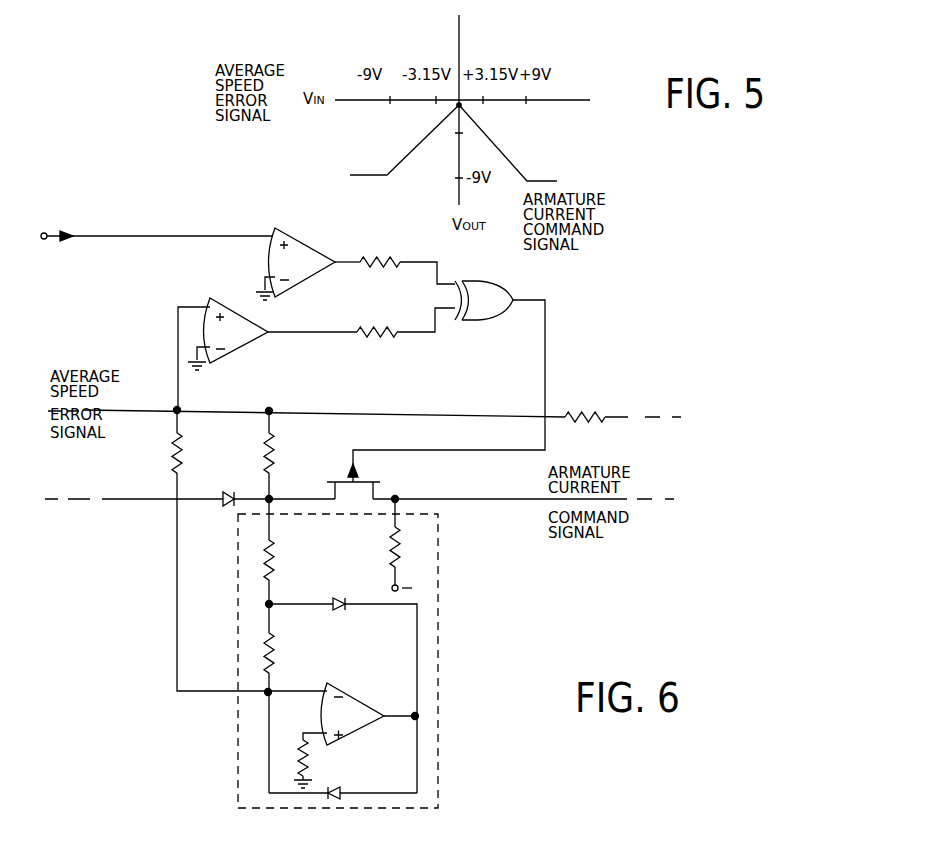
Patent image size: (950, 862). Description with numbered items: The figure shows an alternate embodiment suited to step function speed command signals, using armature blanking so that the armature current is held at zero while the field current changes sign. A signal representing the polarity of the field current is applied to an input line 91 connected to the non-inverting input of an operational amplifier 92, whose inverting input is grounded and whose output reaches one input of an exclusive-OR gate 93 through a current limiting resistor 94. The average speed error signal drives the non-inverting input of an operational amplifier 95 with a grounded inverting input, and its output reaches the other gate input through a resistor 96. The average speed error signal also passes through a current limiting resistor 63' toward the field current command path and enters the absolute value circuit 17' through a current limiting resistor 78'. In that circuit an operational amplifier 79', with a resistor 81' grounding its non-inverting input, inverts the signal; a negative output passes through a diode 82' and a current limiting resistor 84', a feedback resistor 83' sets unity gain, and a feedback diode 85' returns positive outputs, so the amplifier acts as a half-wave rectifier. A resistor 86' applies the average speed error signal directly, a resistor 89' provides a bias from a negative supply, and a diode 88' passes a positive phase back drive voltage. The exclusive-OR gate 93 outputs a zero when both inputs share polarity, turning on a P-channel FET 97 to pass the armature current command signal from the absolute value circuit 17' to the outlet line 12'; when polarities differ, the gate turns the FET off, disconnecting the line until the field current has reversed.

The input line 91 is at (56, 235).
The operational amplifier 92 is at (292, 247).
The exclusive-OR gate 93 is at (478, 292).
The current limiting resistor 94 is at (383, 250).
The operational amplifier 95 is at (242, 346).
The resistor 96 is at (378, 316).
The P-channel FET 97 is at (372, 479).
The current limiting resistor 63' is at (364, 403).
The current limiting resistor 78' is at (249, 550).
The resistor 86' is at (285, 475).
The diode 88' is at (190, 481).
The outlet line 12' is at (523, 517).
The current limiting resistor 84' is at (288, 586).
The resistor 89' is at (378, 545).
The diode 82' is at (343, 681).
The feedback resistor 83' is at (292, 713).
The operational amplifier 79' is at (360, 708).
The resistor 81' is at (318, 764).
The feedback diode 85' is at (343, 780).
The absolute value circuit 17' is at (366, 661).